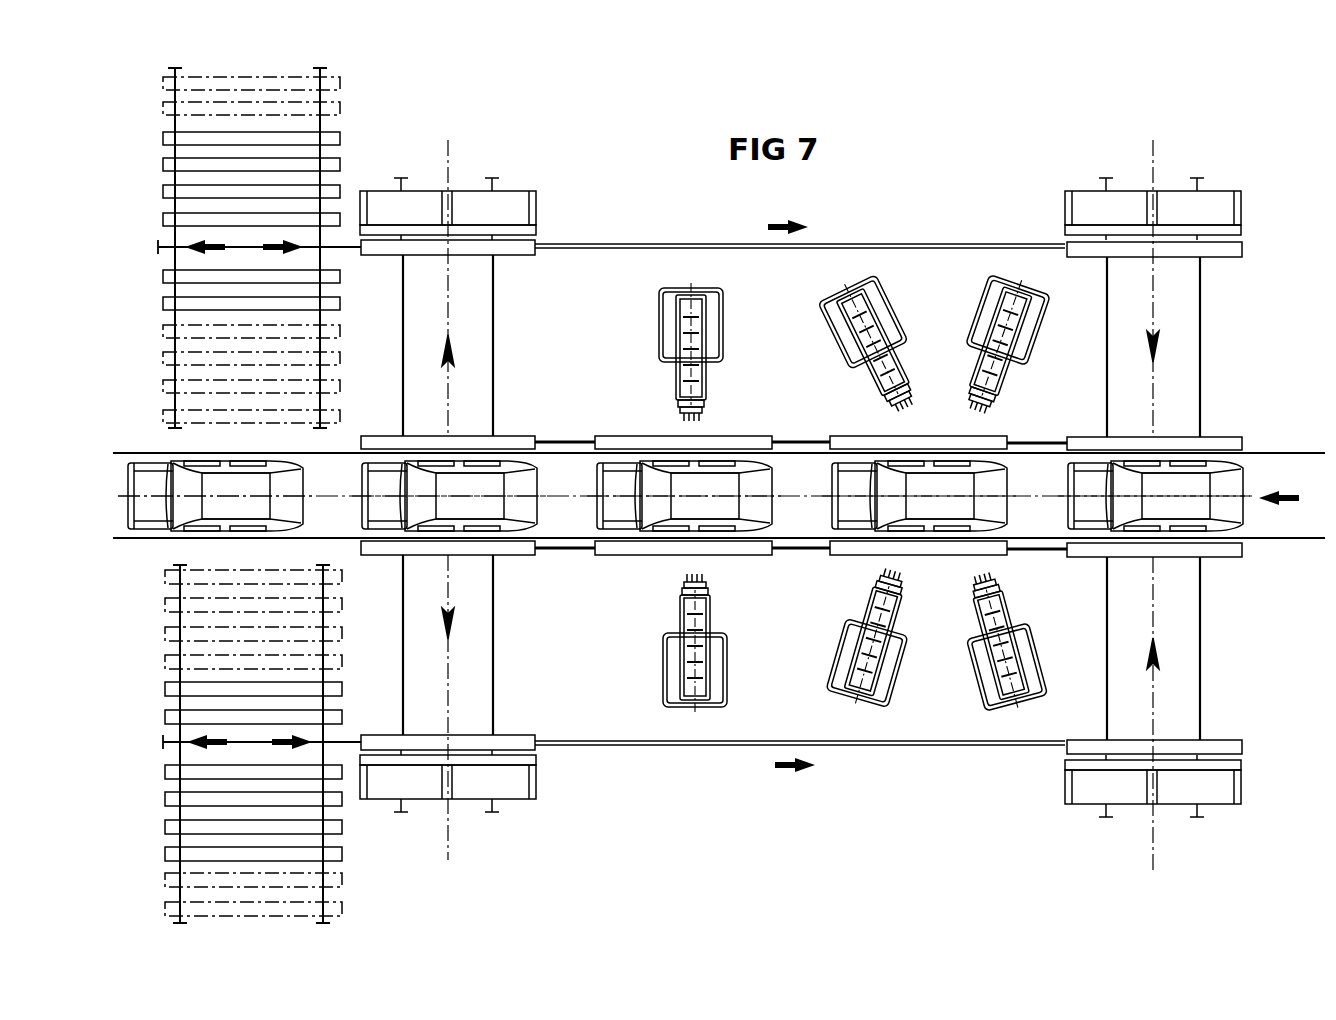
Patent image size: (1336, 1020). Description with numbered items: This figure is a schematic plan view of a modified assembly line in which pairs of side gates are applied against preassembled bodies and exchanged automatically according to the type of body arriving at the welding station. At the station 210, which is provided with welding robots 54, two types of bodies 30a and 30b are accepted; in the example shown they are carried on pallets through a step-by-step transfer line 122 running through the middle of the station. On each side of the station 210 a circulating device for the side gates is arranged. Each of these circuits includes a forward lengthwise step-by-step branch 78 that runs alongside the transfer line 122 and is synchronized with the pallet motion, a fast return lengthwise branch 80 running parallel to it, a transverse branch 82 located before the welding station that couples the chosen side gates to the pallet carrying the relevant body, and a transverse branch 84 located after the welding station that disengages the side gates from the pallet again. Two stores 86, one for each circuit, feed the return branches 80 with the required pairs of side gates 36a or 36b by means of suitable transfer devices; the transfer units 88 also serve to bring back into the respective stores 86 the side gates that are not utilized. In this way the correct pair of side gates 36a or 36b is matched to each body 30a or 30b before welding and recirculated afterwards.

The body (first type) 30a is at (538, 482).
The body (second type) 30b is at (768, 487).
The side gates (first type) 36a is at (342, 303).
The side gates (second type) 36b is at (342, 219).
The welding robots 54 is at (728, 322).
The forward lengthwise step-by-step branch 78 is at (572, 441).
The fast return lengthwise branch 80 is at (690, 244).
The transverse branch before the welding station 82 is at (1203, 360).
The transverse branch after the welding station 84 is at (497, 356).
The stores 86 is at (156, 392).
The transfer units 88 is at (240, 246).
The step-by-step transfer line 122 is at (1290, 462).
The station 210 is at (853, 284).